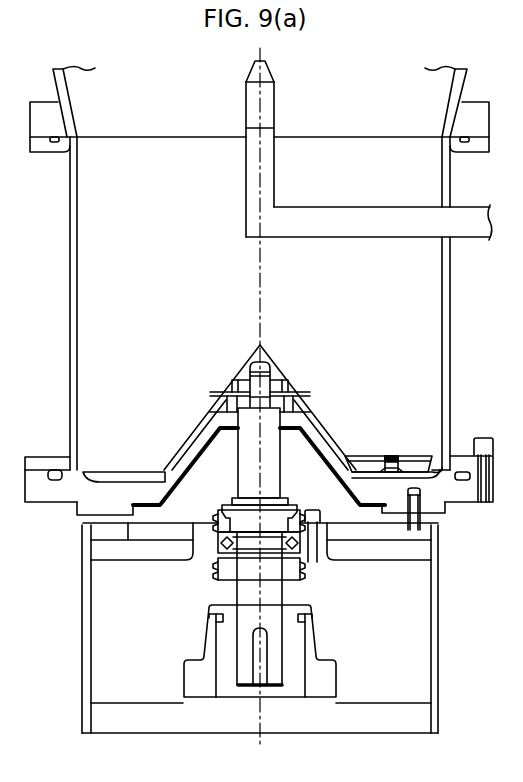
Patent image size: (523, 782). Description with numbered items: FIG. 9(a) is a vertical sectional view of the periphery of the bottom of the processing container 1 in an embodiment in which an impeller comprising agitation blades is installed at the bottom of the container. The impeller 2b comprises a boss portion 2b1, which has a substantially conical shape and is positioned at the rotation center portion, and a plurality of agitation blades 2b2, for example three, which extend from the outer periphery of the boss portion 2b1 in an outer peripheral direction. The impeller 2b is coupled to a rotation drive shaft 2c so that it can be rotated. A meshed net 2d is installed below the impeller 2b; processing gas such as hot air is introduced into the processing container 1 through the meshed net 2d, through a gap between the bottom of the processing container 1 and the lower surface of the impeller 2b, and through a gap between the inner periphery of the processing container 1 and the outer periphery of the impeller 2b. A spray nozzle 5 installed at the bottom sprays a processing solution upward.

The processing container 1 is at (452, 302).
The spray nozzle 5 is at (268, 100).
The impeller 2b is at (327, 425).
The boss portion 2b1 is at (310, 395).
The agitation blades 2b2 is at (377, 460).
The rotation drive shaft 2c is at (270, 472).
The meshed net 2d is at (208, 455).